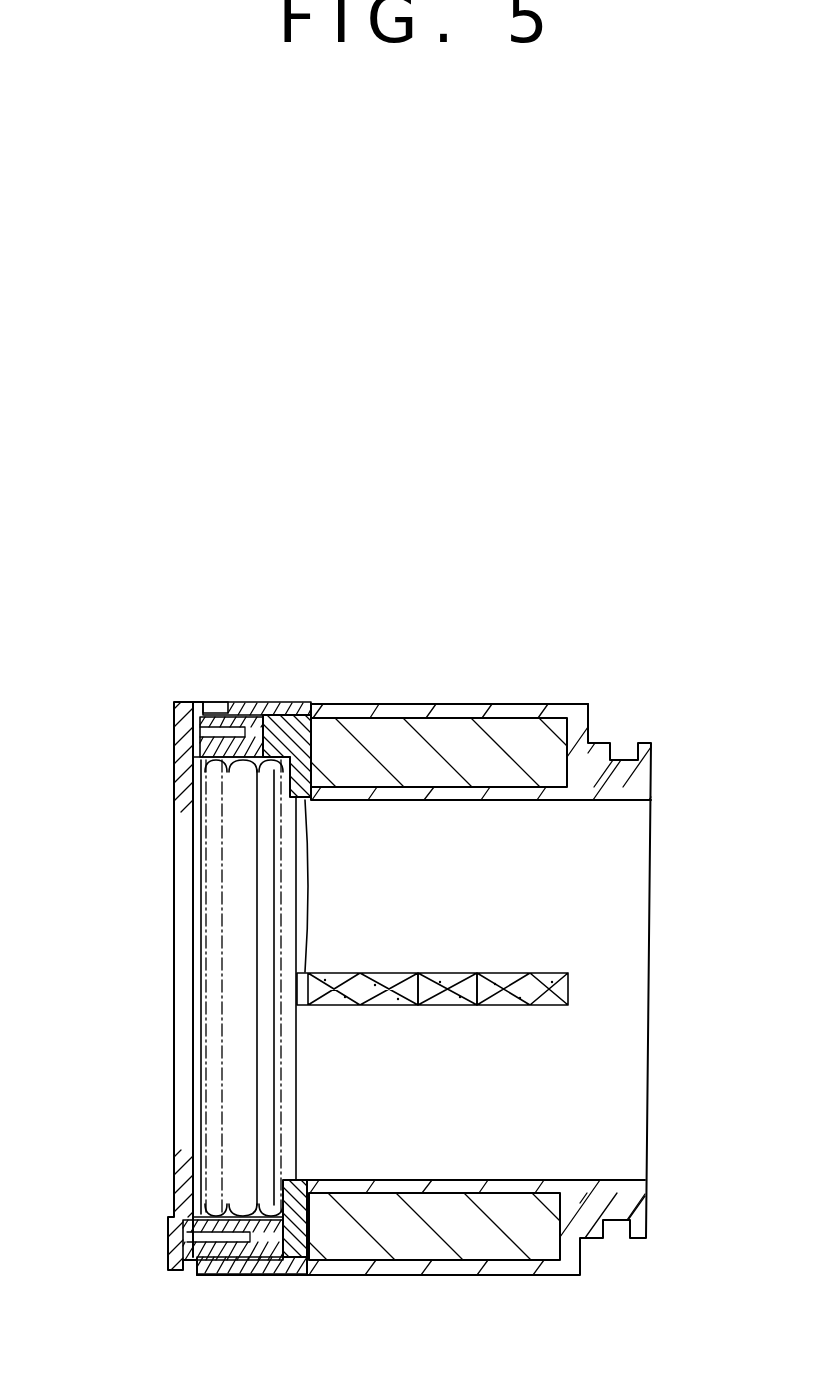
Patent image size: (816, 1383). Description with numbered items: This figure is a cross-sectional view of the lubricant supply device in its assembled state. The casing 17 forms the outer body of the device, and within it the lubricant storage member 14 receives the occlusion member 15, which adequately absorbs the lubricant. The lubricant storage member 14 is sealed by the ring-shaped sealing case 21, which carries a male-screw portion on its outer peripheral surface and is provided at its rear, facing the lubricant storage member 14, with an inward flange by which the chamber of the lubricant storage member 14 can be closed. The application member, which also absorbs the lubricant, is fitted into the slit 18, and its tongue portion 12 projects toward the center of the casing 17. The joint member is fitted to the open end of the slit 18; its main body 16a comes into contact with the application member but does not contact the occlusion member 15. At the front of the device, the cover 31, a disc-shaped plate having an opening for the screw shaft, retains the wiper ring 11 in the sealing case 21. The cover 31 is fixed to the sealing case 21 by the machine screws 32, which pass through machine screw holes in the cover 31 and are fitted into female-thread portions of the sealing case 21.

The wiper ring 11 is at (233, 917).
The tongue portion 12 is at (453, 973).
The lubricant storage member 14 is at (560, 723).
The occlusion member 15 is at (513, 743).
The main body 16a is at (301, 796).
The casing 17 is at (385, 706).
The slit 18 is at (392, 973).
The sealing case 21 is at (247, 718).
The cover 31 is at (177, 772).
The machine screws 32 is at (203, 697).